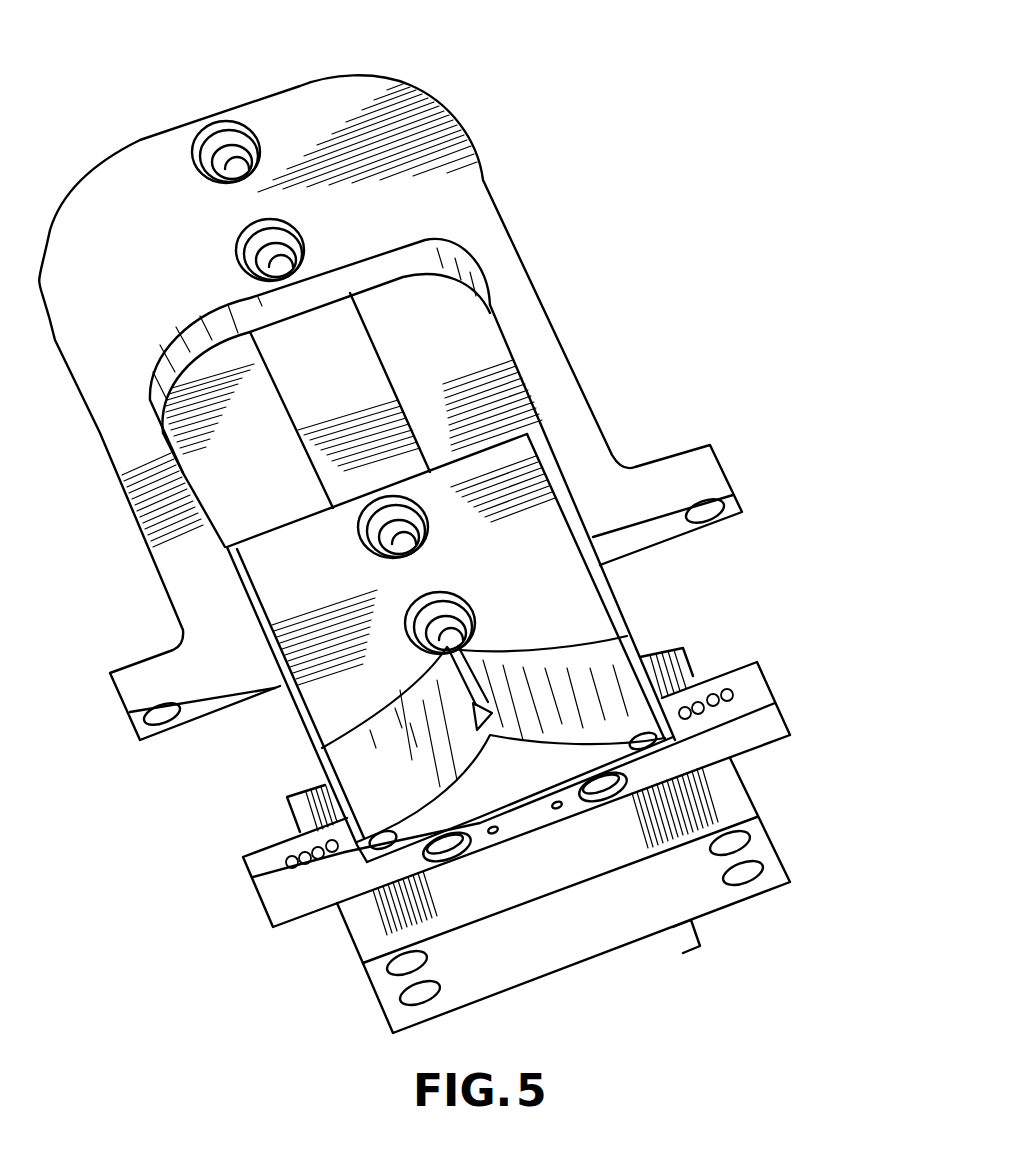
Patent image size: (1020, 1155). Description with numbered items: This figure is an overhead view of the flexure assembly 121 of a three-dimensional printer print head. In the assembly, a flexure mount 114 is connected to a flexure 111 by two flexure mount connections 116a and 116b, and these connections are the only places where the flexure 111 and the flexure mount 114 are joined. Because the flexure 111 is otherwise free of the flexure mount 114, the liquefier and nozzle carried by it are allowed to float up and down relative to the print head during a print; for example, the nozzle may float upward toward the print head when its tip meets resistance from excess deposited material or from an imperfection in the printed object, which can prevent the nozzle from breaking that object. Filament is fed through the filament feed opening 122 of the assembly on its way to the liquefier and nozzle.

The flexure 111 is at (348, 382).
The flexure mount 114 is at (550, 372).
The flexure mount connection 116a is at (245, 143).
The flexure mount connection 116b is at (293, 243).
The flexure assembly 121 is at (891, 93).
The filament feed opening 122 is at (478, 718).